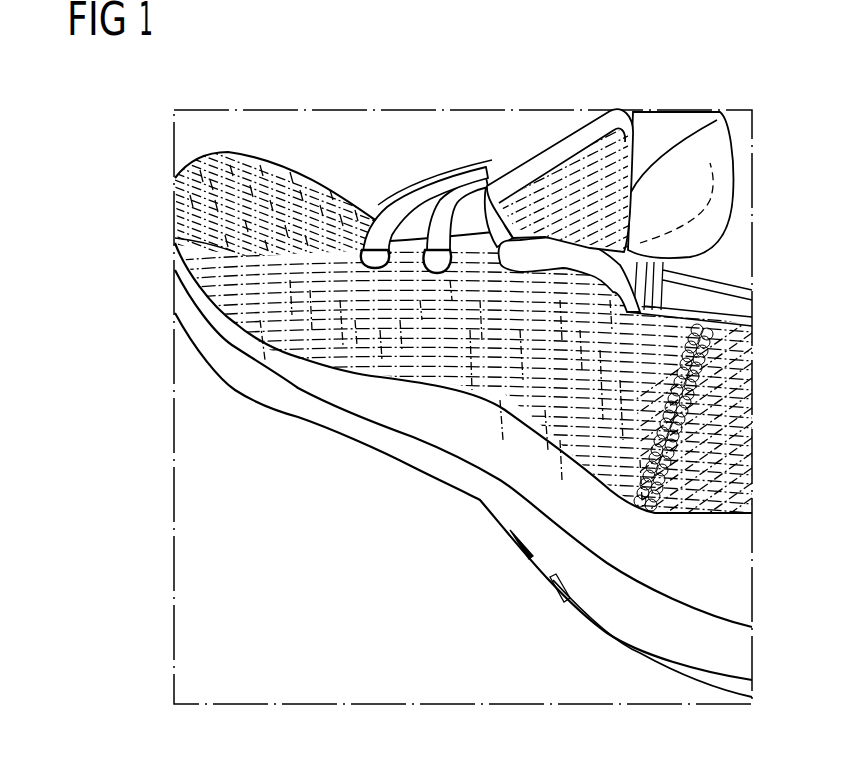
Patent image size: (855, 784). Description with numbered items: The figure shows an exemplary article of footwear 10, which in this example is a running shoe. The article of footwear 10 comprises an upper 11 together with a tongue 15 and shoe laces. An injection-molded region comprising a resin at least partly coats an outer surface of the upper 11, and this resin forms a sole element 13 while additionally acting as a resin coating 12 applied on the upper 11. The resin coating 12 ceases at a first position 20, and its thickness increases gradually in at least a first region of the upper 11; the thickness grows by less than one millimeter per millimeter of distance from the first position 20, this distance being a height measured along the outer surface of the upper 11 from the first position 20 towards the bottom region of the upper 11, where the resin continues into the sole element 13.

The article of footwear 10 is at (122, 155).
The upper 11 is at (205, 243).
The resin coating 12 is at (223, 327).
The sole element 13 is at (232, 366).
The tongue 15 is at (573, 157).
The first position 20 is at (268, 357).